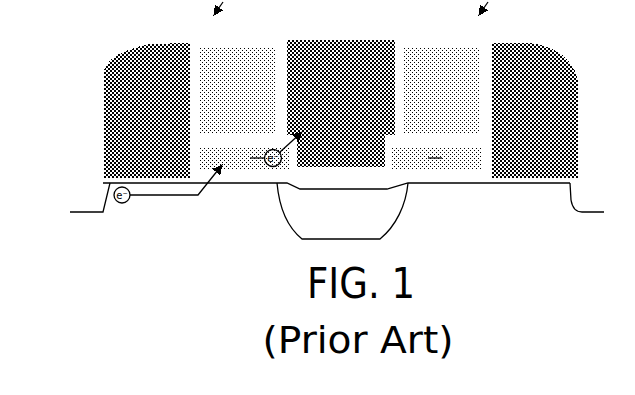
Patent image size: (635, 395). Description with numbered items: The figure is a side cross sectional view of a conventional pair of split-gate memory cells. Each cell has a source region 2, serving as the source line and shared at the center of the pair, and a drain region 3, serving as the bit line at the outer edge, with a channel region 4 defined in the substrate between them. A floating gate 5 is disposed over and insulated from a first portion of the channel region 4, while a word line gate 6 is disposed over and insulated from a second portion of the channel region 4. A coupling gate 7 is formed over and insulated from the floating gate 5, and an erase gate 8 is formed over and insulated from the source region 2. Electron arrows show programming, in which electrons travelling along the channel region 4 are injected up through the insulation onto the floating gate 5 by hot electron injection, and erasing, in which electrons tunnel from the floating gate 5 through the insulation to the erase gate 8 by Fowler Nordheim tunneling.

The source region 2 is at (331, 228).
The drain region 3 is at (81, 210).
The channel region 4 is at (203, 215).
The floating gate 5 is at (257, 158).
The word line gate 6 is at (136, 130).
The coupling gate 7 is at (228, 103).
The erase gate 8 is at (331, 103).